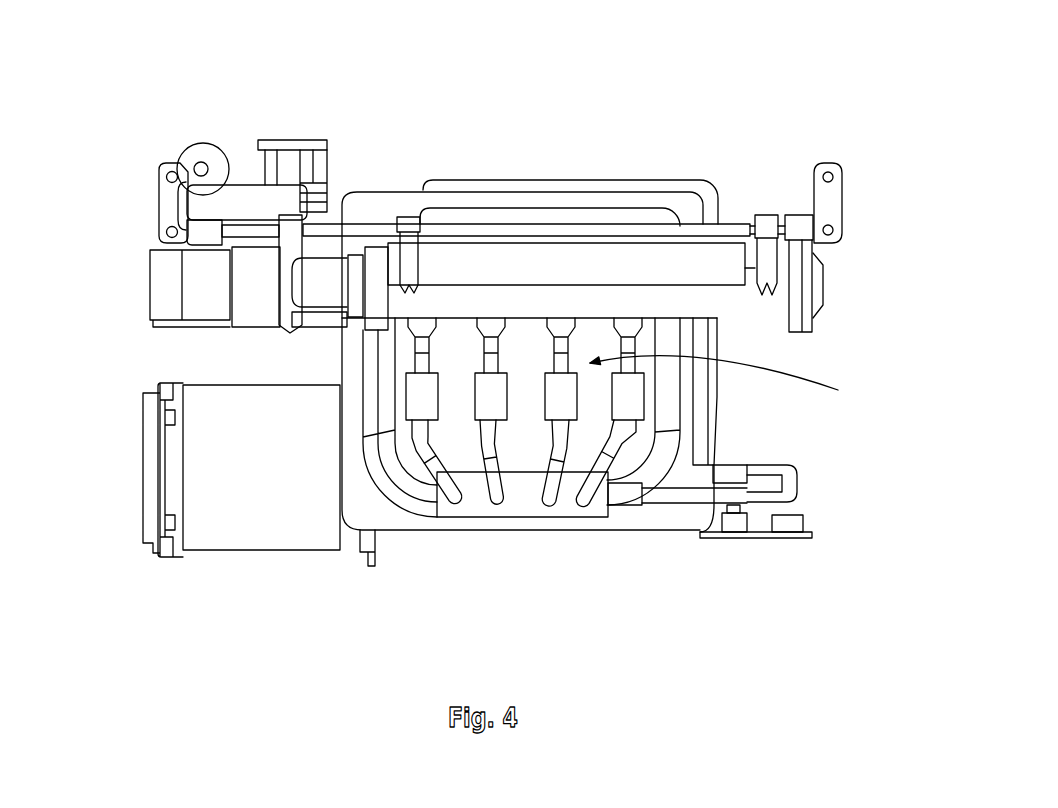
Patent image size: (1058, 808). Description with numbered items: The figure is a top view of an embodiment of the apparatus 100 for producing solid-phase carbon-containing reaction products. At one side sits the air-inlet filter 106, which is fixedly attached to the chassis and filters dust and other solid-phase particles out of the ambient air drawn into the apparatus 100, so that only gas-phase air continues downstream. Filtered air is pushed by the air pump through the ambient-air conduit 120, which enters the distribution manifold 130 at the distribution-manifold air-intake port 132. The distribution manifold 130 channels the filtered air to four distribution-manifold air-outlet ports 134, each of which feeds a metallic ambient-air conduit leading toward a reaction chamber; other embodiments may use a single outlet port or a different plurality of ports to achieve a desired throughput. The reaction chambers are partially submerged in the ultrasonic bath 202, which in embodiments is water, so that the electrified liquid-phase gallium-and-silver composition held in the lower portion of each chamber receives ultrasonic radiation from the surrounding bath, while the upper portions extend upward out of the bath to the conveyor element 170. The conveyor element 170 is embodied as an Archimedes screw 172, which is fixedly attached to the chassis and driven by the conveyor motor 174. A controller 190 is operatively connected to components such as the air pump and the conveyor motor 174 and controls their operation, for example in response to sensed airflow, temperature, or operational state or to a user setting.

The apparatus 100 is at (418, 50).
The controller 190 is at (258, 137).
The conveyor motor 174 is at (245, 298).
The conveyor element 170 is at (566, 264).
The Archimedes screw 172 is at (526, 230).
The distribution manifold 130 is at (522, 503).
The distribution-manifold air-outlet port 134 is at (437, 490).
The ultrasonic bath 202 is at (735, 381).
The distribution-manifold air-intake port 132 is at (625, 495).
The ambient-air conduit 120 is at (790, 478).
The air-inlet filter 106 is at (278, 483).